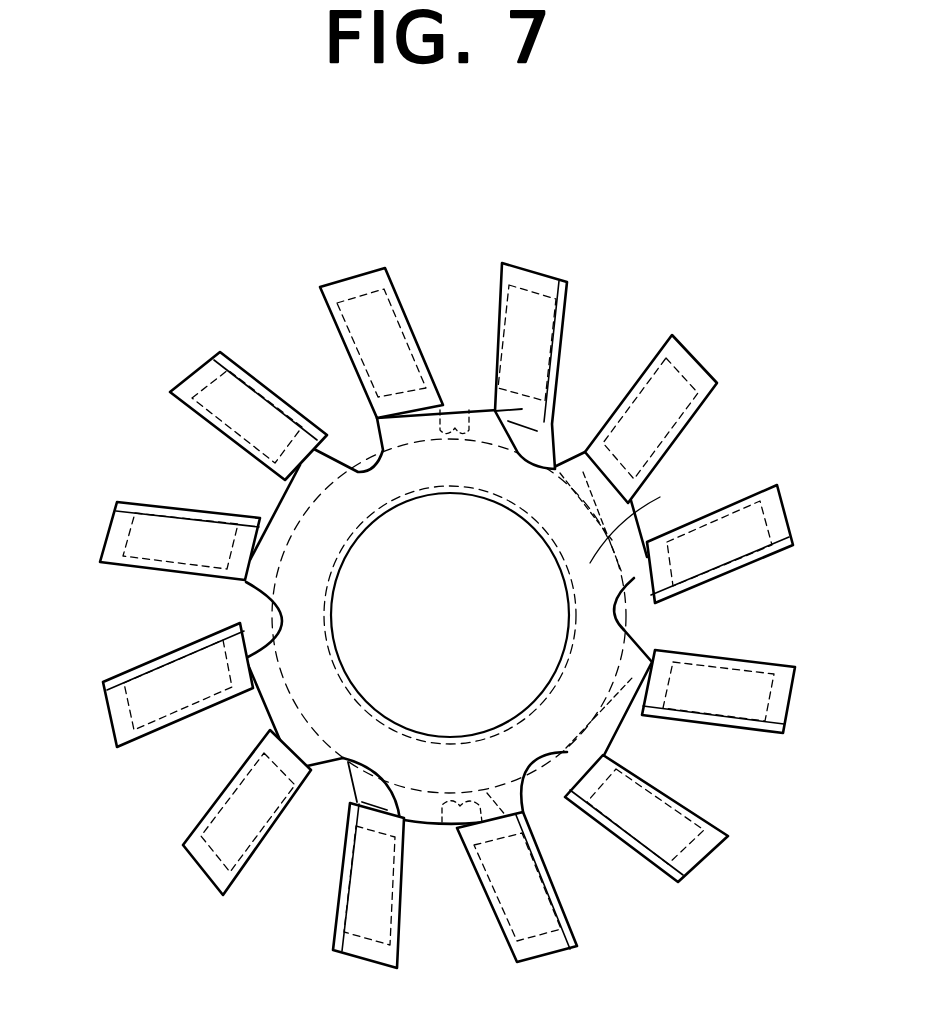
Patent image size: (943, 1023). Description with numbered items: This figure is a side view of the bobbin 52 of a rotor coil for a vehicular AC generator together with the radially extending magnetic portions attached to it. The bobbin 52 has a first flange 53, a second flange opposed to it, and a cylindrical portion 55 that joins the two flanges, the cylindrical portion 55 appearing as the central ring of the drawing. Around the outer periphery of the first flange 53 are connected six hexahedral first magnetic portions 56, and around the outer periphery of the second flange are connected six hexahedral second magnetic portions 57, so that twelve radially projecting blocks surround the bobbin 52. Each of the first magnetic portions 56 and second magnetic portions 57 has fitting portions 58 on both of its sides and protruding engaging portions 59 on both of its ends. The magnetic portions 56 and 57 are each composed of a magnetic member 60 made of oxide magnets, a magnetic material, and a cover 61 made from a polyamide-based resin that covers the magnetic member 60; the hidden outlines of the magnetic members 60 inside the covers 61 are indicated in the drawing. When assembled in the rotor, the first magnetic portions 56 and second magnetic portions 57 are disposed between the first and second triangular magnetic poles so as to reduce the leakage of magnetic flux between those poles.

The bobbin 52 is at (450, 602).
The first flange 53 is at (597, 658).
The cylindrical portion 55 is at (640, 738).
The first magnetic portions 56 is at (567, 307).
The second magnetic portions 57 is at (365, 282).
The fitting portions 58 is at (503, 263).
The engaging portions 59 is at (505, 263).
The magnetic members 60 is at (350, 952).
The covers 61 is at (493, 908).